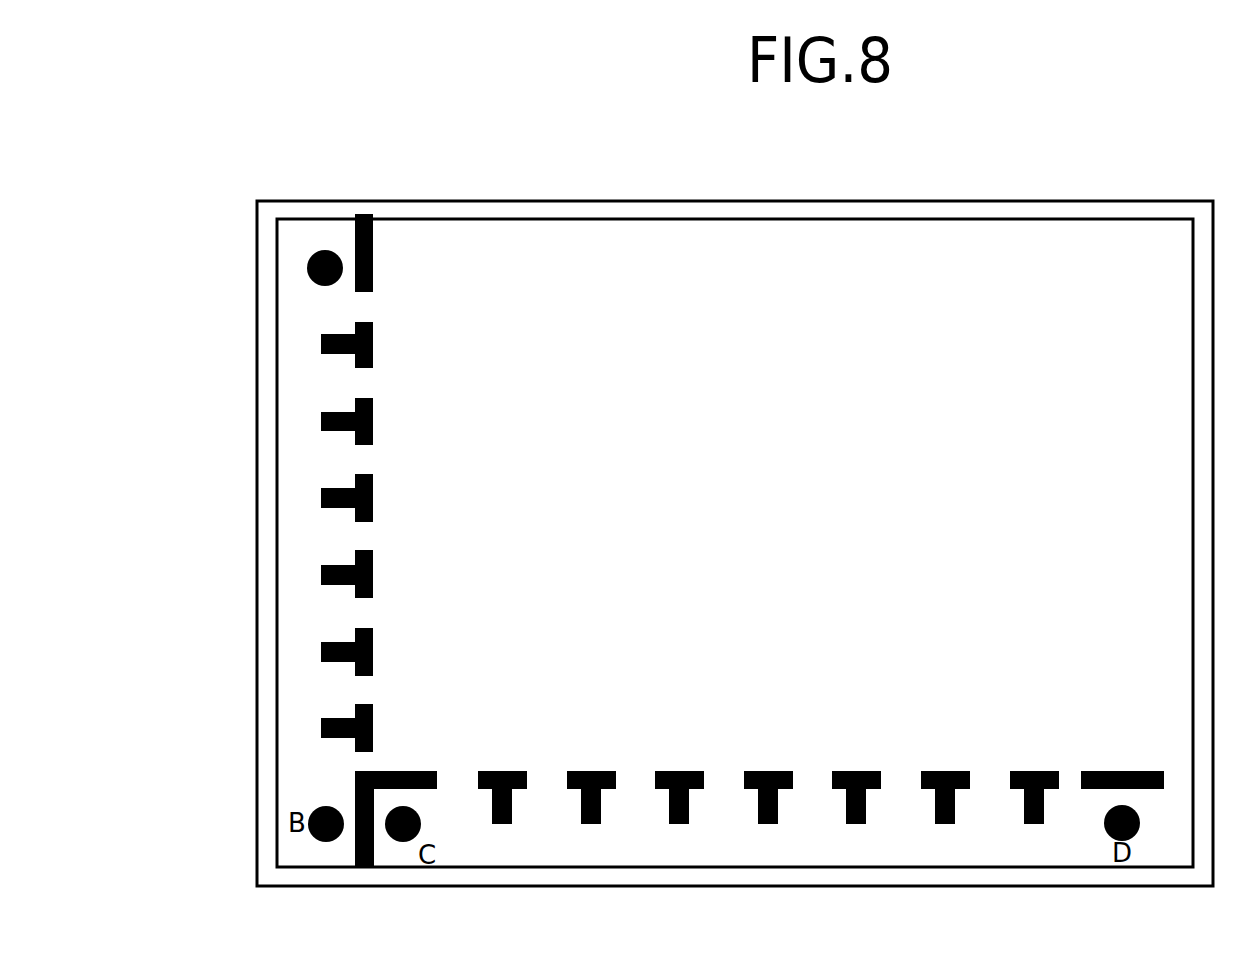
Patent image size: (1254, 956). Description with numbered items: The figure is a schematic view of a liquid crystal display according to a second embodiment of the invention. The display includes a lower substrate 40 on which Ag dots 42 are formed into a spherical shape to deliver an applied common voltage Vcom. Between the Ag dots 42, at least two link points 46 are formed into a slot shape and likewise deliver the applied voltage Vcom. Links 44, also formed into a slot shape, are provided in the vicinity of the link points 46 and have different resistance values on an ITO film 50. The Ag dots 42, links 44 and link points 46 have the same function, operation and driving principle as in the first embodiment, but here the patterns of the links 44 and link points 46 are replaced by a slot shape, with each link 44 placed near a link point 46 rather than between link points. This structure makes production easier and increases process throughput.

The lower substrate 40 is at (1060, 212).
The Ag dots 42 is at (307, 267).
The links 44 is at (374, 403).
The link points 46 is at (322, 413).
The ITO film 50 is at (1082, 322).